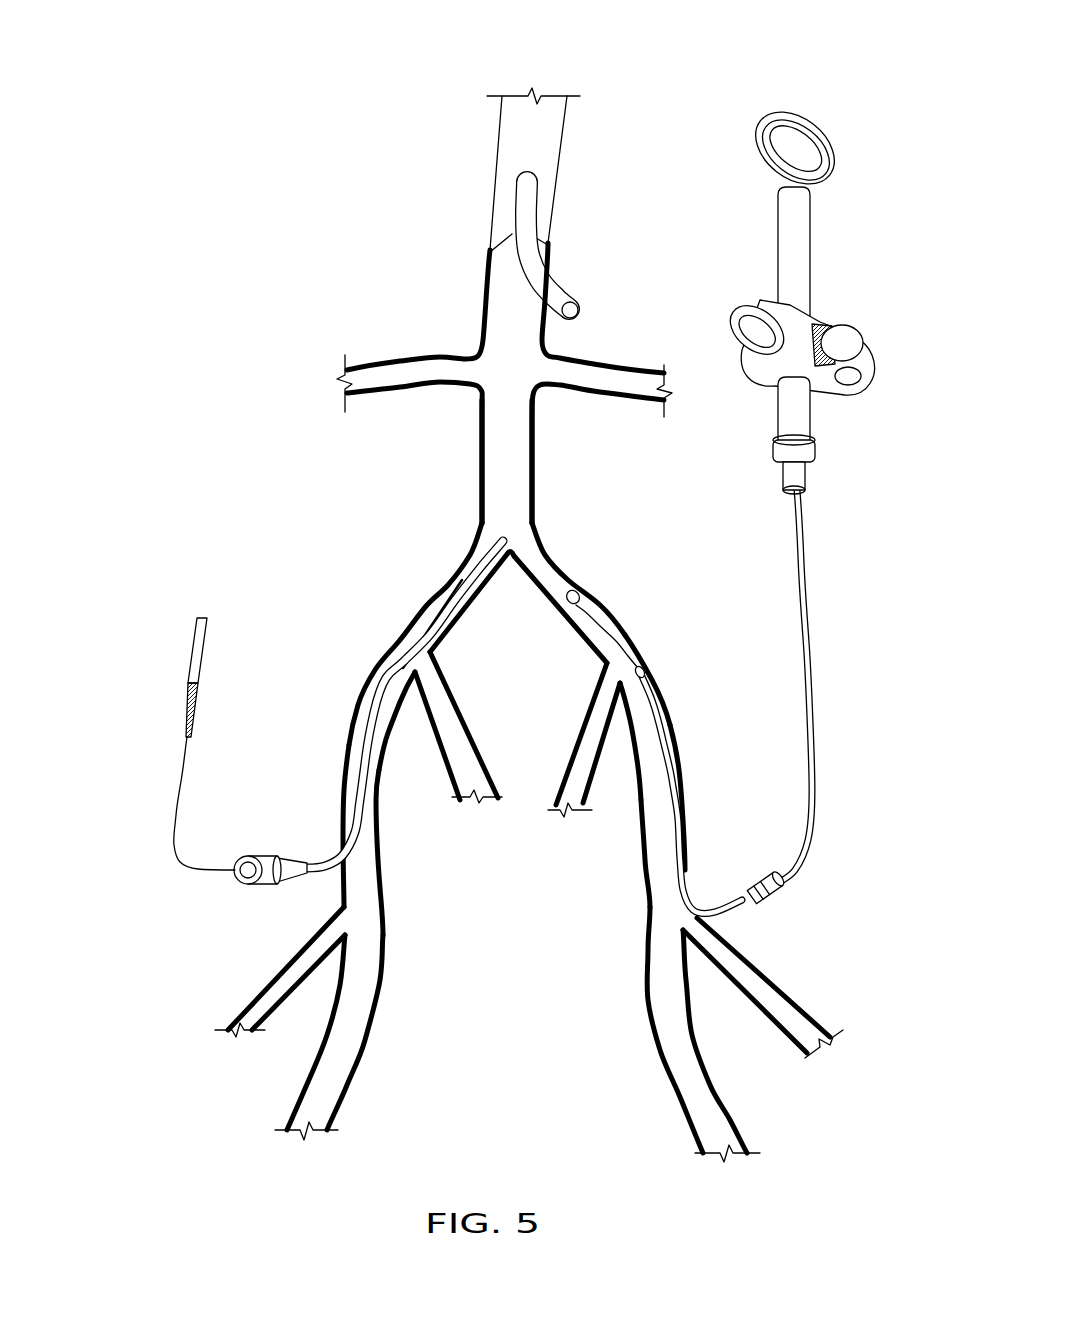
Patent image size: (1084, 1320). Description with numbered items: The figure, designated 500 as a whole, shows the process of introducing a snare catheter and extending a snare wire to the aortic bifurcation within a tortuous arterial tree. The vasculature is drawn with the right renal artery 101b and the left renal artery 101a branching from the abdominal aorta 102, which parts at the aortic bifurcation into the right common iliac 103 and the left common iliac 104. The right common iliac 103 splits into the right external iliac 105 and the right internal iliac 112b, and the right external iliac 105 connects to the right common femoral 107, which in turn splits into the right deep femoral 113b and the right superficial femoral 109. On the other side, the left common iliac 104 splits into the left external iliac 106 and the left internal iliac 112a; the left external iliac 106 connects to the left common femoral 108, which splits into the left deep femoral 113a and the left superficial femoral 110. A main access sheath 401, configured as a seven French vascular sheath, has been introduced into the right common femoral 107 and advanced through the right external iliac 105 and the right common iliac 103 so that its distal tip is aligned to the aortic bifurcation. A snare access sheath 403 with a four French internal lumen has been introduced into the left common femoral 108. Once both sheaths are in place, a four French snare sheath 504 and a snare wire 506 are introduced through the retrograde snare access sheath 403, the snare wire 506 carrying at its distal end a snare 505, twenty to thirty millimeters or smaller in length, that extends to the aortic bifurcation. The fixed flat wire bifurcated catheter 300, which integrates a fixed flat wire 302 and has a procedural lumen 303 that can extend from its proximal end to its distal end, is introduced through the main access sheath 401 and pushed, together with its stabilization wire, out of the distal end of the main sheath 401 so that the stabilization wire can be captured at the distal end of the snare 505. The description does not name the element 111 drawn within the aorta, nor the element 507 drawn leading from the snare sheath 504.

The vascular access system 500 is at (677, 66).
The aortic catheter 111 is at (525, 222).
The left renal artery 101a is at (597, 357).
The right renal artery 101b is at (427, 357).
The abdominal aorta 102 is at (533, 457).
The right common iliac 103 is at (447, 580).
The left common iliac 104 is at (580, 572).
The right external iliac 105 is at (365, 685).
The left external iliac 106 is at (663, 688).
The right common femoral 107 is at (383, 822).
The left common femoral 108 is at (650, 865).
The right superficial femoral 109 is at (377, 1007).
The left superficial femoral 110 is at (657, 1037).
The left internal iliac 112a is at (587, 720).
The right internal iliac 112b is at (435, 695).
The left deep femoral 113a is at (740, 967).
The right deep femoral 113b is at (307, 948).
The bifurcated catheter 300 is at (193, 643).
The fixed flat wire 302 is at (177, 858).
The procedural lumen 303 is at (183, 718).
The main access sheath 401 is at (355, 792).
The snare access sheath 403 is at (710, 890).
The snare sheath 504 is at (815, 678).
The snare 505 is at (583, 598).
The snare wire 506 is at (607, 635).
The delivery tube 507 is at (683, 790).